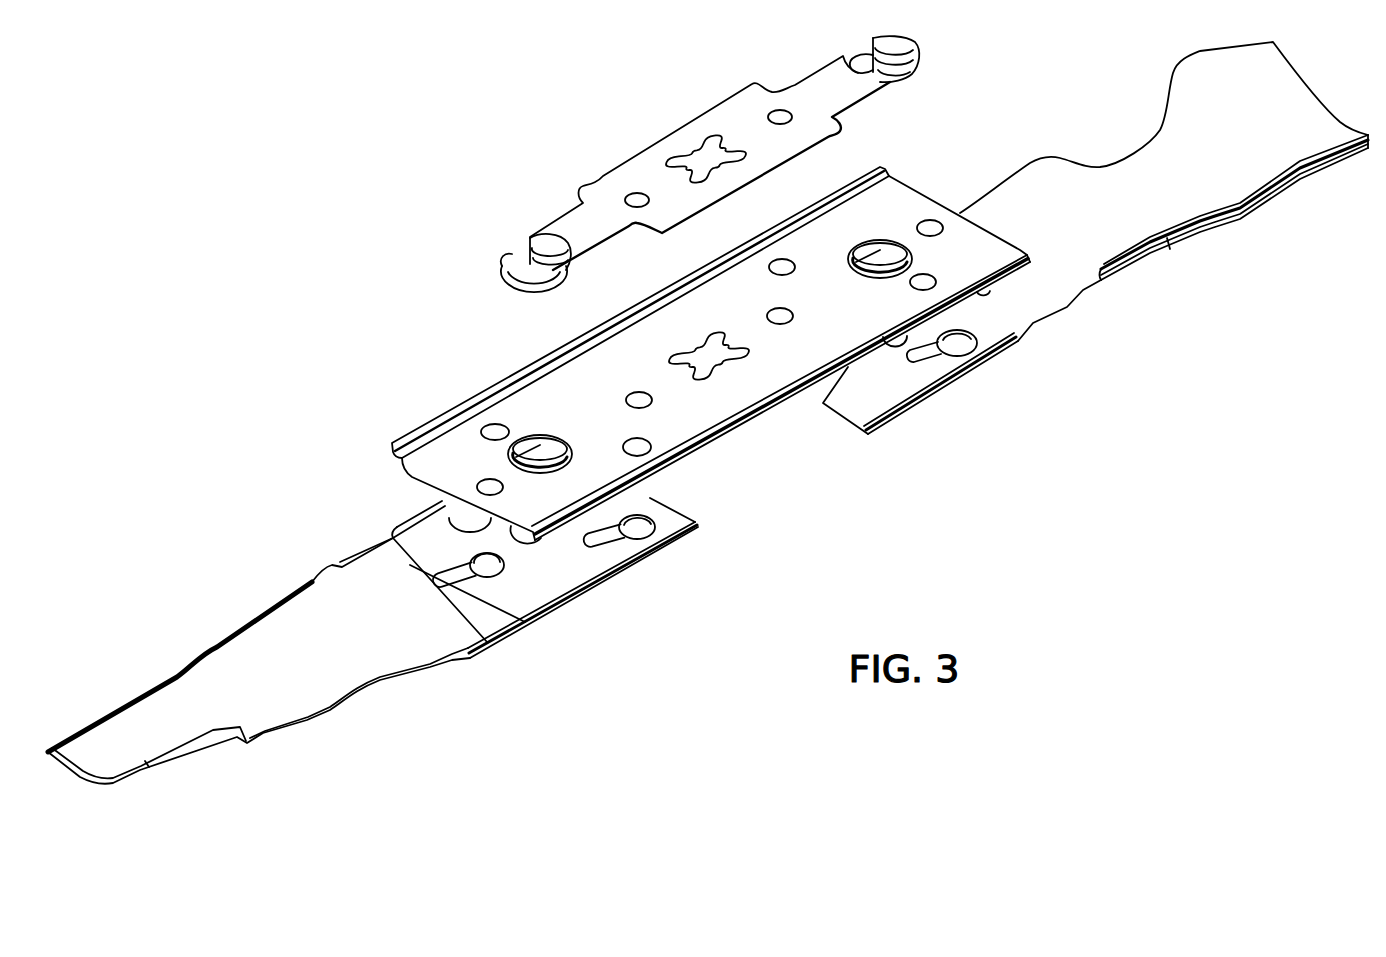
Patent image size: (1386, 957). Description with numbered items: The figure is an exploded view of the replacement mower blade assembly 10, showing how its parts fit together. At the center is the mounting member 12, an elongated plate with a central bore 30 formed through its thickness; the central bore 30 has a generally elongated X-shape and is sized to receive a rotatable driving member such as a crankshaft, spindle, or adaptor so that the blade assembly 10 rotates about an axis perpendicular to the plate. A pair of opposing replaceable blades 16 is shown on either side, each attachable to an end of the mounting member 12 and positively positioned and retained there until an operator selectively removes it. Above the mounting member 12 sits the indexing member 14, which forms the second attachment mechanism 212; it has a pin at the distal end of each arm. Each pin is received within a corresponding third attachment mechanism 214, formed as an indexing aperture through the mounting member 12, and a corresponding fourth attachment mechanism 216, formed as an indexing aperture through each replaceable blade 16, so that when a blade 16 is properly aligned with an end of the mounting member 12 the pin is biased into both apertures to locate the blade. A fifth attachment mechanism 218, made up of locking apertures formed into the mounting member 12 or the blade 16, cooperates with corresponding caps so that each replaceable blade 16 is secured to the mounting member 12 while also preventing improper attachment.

The replacement mower blade assembly 10 is at (372, 172).
The mounting member 12 is at (728, 421).
The indexing member 14 is at (704, 110).
The replaceable blade 16 is at (1083, 292).
The central bore 30 is at (717, 357).
The second attachment mechanism 212 is at (600, 168).
The third attachment mechanism 214 is at (850, 255).
The fourth attachment mechanism 216 is at (897, 348).
The fifth attachment mechanism 218 is at (966, 331).